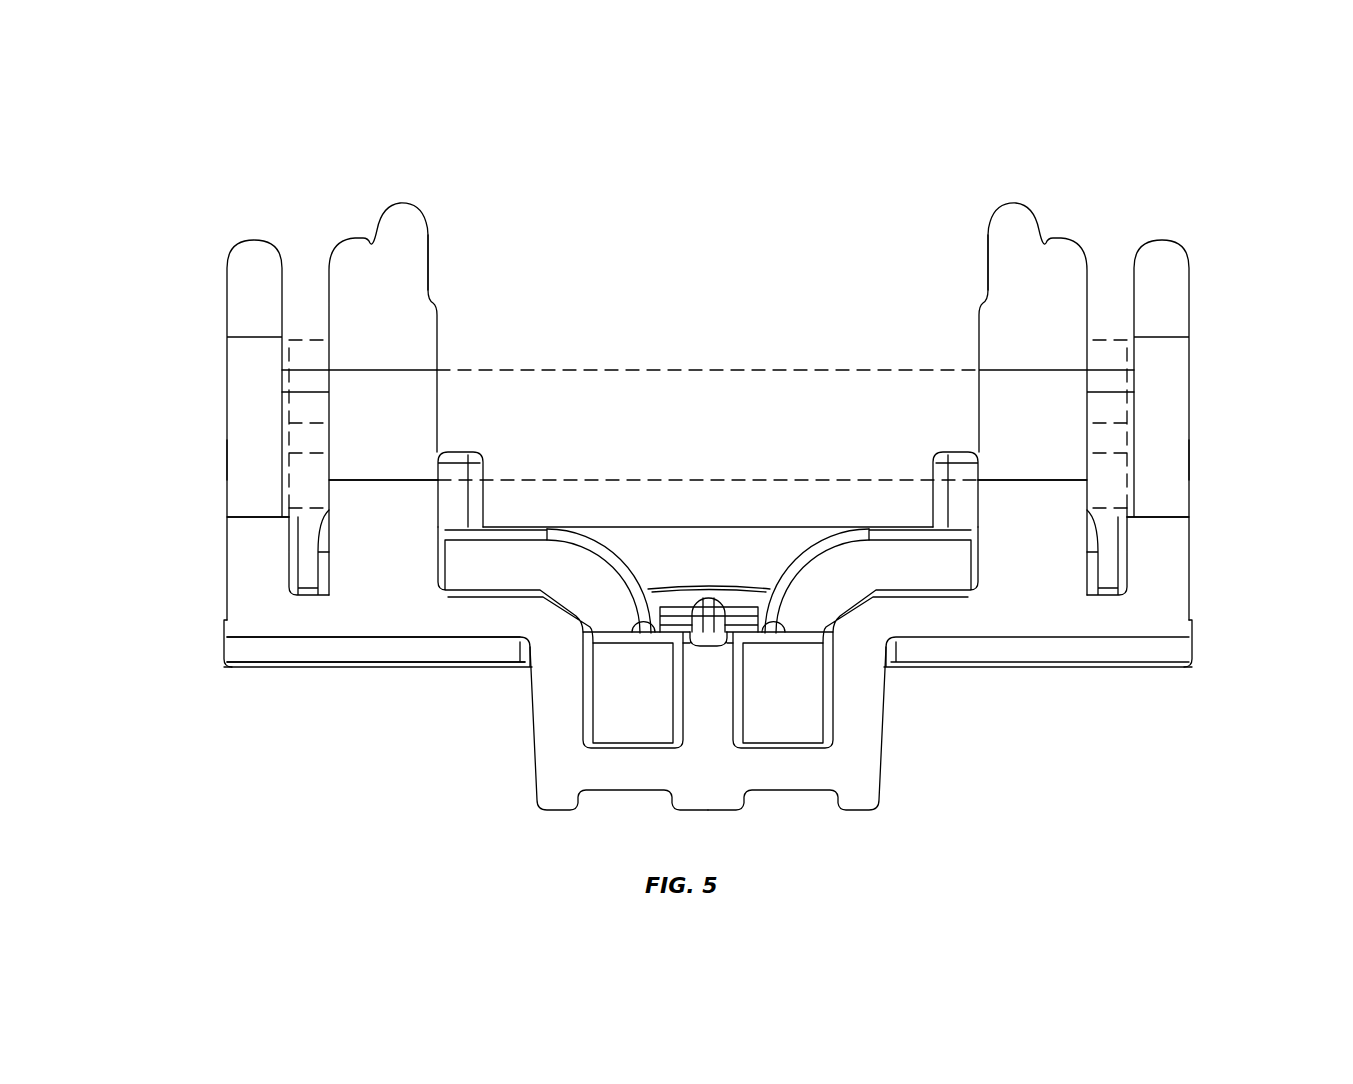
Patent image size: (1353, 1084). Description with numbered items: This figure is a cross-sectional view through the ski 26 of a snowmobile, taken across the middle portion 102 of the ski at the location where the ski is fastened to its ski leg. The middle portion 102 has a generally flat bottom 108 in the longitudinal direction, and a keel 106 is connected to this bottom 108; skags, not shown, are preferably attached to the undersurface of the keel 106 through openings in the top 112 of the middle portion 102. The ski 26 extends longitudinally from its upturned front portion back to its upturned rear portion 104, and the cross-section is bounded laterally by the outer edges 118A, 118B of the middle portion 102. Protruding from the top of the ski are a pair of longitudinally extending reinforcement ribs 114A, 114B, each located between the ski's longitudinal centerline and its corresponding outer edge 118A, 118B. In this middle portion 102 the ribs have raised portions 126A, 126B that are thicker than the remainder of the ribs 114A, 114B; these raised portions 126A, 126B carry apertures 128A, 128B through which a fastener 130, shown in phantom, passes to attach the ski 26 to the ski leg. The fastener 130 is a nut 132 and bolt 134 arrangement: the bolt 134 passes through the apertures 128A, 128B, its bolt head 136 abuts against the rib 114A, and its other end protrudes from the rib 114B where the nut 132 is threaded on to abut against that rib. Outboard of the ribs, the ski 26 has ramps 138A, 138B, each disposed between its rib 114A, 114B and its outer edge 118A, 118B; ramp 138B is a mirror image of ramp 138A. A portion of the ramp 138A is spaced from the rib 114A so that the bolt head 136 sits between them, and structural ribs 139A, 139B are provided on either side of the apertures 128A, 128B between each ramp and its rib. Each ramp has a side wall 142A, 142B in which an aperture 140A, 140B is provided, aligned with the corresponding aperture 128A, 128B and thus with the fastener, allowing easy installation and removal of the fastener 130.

The ski 26 is at (688, 238).
The middle portion 102 is at (360, 612).
The rear portion 104 is at (711, 554).
The keel 106 is at (555, 743).
The bottom 108 is at (442, 658).
The top 112 is at (500, 605).
The rib 114A is at (418, 273).
The rib 114B is at (1002, 272).
The outer edge 118A is at (225, 647).
The outer edge 118B is at (1195, 643).
The raised portion 126A is at (373, 248).
The raised portion 126B is at (1028, 232).
The aperture 128A is at (410, 410).
The aperture 128B is at (992, 407).
The fastener 130 is at (744, 358).
The nut 132 is at (1104, 337).
The bolt 134 is at (622, 405).
The bolt head 136 is at (312, 337).
The ramp 138A is at (260, 255).
The ramp 138B is at (1012, 213).
The structural ribs 139A is at (297, 419).
The structural ribs 139B is at (1120, 430).
The aperture 140A is at (238, 453).
The aperture 140B is at (1173, 470).
The side wall 142A is at (245, 568).
The side wall 142B is at (1177, 583).